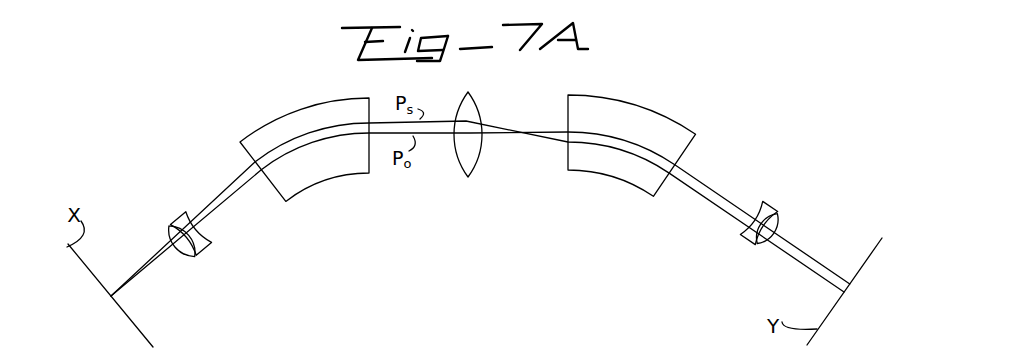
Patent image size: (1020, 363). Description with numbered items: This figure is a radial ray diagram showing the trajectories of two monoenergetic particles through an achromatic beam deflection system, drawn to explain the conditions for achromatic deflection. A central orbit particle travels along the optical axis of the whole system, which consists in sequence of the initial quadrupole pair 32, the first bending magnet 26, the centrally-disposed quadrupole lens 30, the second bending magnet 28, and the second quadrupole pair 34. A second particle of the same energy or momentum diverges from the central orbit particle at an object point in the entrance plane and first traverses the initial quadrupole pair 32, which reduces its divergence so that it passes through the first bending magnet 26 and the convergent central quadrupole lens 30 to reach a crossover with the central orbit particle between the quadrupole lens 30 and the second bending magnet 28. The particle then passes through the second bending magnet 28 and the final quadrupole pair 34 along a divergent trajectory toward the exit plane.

The first bending magnet 26 is at (297, 112).
The second bending magnet 28 is at (673, 125).
The centrally-disposed quadrupole lens 30 is at (475, 97).
The initial quadrupole pair 32 is at (174, 219).
The second quadrupole pair 34 is at (778, 220).